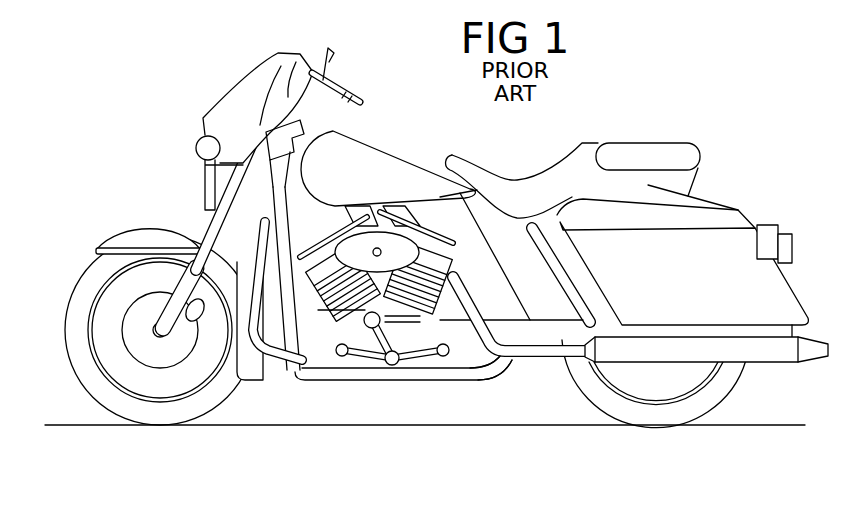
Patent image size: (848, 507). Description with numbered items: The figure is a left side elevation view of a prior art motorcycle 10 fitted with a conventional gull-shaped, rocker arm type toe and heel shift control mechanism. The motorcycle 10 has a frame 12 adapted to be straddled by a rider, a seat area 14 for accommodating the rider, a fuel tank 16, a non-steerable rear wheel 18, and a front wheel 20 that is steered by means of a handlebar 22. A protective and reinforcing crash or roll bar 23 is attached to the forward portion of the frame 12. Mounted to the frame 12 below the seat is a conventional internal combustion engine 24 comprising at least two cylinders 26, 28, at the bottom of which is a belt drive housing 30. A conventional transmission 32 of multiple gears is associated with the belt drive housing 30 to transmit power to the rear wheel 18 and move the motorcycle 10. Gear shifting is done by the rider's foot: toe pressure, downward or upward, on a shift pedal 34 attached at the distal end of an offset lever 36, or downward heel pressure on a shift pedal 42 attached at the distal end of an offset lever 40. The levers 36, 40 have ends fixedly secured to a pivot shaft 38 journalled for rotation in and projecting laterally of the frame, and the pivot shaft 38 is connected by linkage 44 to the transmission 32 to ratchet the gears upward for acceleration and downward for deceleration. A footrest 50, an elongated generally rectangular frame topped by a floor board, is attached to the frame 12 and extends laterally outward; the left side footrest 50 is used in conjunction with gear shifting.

The motorcycle 10 is at (580, 114).
The frame 12 is at (282, 185).
The seat area 14 is at (543, 167).
The fuel tank 16 is at (378, 242).
The rear wheel 18 is at (718, 385).
The front wheel 20 is at (90, 378).
The handlebar 22 is at (343, 92).
The crash or roll bar 23 is at (240, 245).
The internal combustion engine 24 is at (333, 331).
The cylinder 26 is at (278, 352).
The cylinder 28 is at (457, 270).
The belt drive housing 30 is at (473, 290).
The transmission 32 is at (495, 303).
The shift pedal 34 is at (343, 357).
The offset lever 36 is at (365, 357).
The pivot shaft 38 is at (392, 366).
The offset lever 40 is at (443, 357).
The shift pedal 42 is at (483, 381).
The linkage 44 is at (455, 238).
The footrest 50 is at (497, 372).